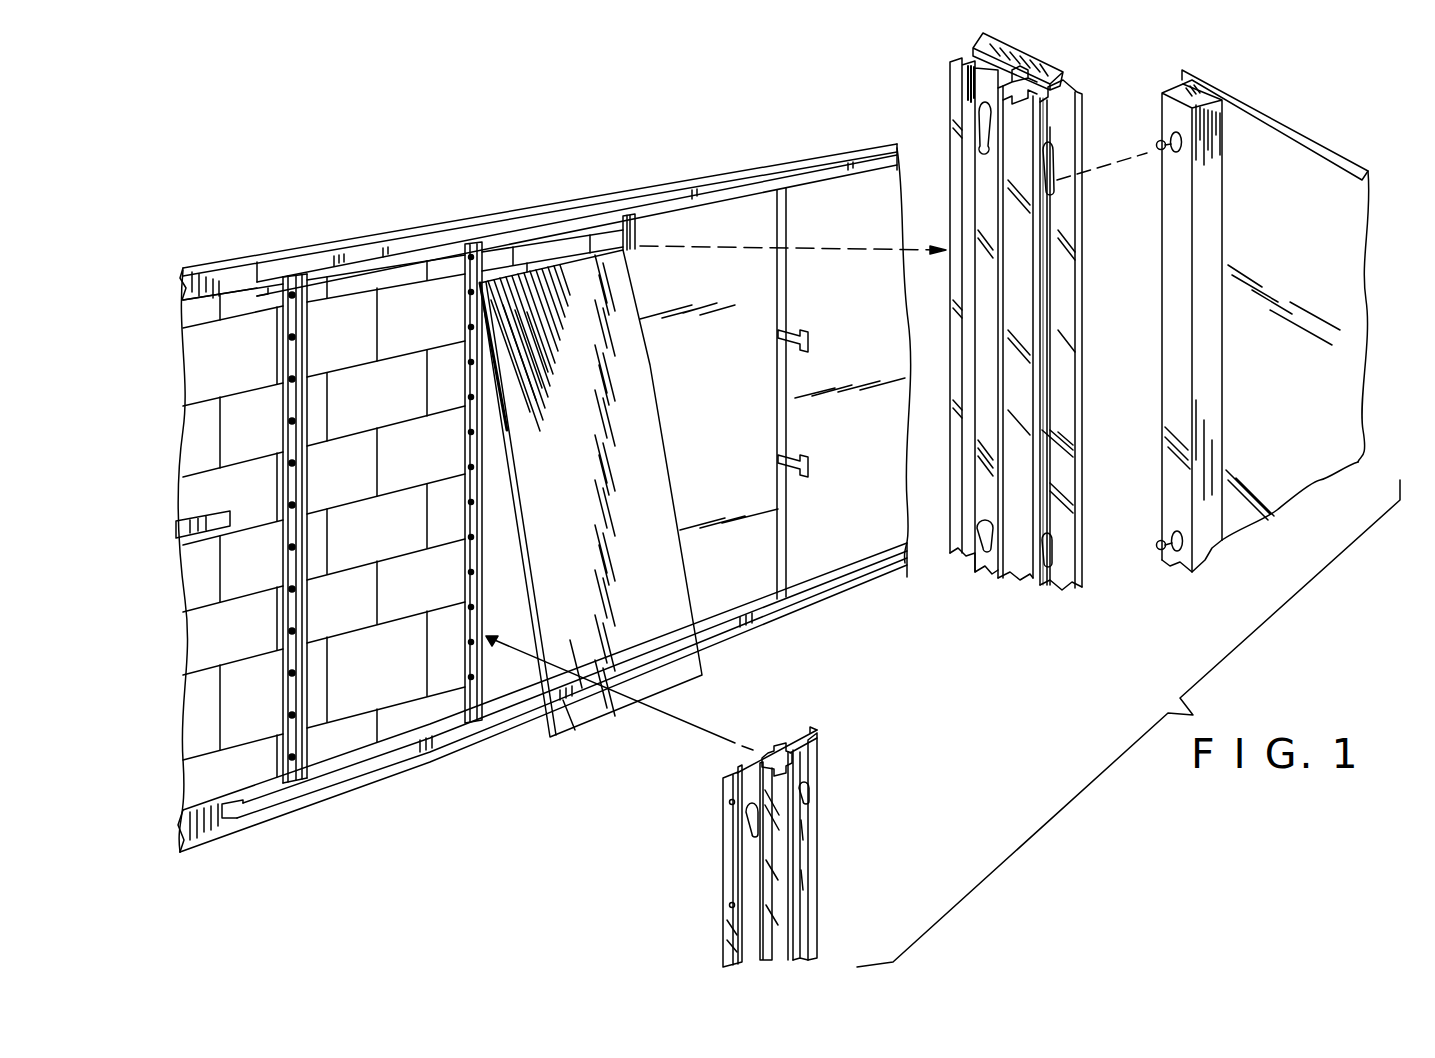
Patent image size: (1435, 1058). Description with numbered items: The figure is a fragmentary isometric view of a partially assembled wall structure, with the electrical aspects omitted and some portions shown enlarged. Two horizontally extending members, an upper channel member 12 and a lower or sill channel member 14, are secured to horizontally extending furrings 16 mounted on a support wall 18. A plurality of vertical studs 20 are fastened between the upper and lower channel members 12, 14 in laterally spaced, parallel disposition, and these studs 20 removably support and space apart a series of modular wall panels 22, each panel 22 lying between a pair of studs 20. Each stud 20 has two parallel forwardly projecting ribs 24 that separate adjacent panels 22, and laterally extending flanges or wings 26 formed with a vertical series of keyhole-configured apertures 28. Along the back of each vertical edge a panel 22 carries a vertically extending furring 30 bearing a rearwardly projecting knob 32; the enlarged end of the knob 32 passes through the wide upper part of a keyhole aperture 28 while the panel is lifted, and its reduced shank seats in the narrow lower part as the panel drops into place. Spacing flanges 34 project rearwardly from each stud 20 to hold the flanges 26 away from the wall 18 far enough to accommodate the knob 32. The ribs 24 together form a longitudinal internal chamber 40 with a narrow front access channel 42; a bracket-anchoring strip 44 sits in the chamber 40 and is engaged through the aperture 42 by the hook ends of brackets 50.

The upper channel member 12 is at (325, 250).
The lower or sill channel member 14 is at (428, 748).
The furrings 16 is at (226, 262).
The support wall 18 is at (203, 373).
The stud 20 is at (486, 255).
The modular wall panel 22 is at (727, 207).
The rib 24 is at (310, 758).
The flange or wing 26 is at (292, 758).
The keyhole aperture 28 is at (292, 707).
The furring 30 is at (1020, 68).
The key or knob 32 is at (978, 153).
The spacing flange 34 is at (955, 315).
The internal chamber 40 is at (1010, 90).
The narrow aperture or access channel 42 is at (798, 842).
The bracket-anchoring strip 44 is at (1043, 80).
The bracket 50 is at (808, 343).